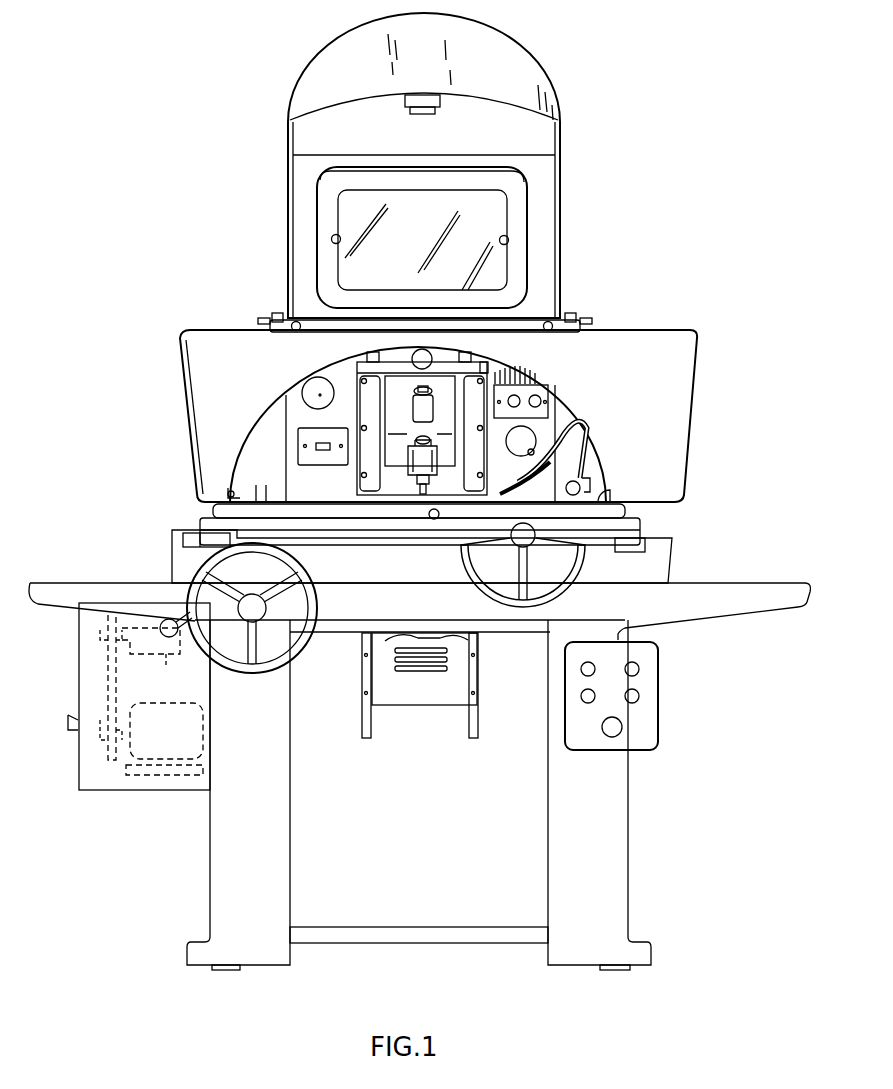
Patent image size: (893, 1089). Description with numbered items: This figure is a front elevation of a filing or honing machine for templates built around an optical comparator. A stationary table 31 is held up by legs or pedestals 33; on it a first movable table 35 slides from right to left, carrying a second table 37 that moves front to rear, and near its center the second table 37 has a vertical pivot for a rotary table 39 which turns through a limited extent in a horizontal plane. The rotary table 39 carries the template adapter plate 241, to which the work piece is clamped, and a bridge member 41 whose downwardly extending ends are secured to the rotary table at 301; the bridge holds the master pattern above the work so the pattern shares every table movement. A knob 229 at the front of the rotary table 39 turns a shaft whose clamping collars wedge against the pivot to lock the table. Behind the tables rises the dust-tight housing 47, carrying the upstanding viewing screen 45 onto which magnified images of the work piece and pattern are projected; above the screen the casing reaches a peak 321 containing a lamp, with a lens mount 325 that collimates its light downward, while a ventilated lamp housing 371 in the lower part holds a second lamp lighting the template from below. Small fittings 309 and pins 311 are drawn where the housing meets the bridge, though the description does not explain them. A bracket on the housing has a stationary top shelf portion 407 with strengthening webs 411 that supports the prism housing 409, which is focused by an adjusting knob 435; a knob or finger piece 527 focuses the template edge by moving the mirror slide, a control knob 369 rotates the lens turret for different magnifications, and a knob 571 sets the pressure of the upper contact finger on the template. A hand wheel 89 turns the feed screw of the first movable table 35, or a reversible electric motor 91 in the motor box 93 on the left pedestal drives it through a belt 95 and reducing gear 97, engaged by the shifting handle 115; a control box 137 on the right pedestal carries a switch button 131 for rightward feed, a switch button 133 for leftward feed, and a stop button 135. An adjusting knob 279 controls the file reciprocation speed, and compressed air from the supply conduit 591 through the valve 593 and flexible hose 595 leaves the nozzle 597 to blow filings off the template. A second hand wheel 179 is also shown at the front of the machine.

The stationary table 31 is at (742, 606).
The legs or pedestals 33 is at (278, 852).
The first movable table 35 is at (660, 570).
The second table 37 is at (365, 540).
The rotary table 39 is at (213, 510).
The bridge member 41 is at (192, 410).
The viewing screen 45 is at (494, 228).
The housing 47 is at (287, 190).
The hand wheel 89 is at (258, 673).
The reversible electric motor 91 is at (152, 708).
The motor box 93 is at (172, 786).
The belt 95 is at (108, 678).
The reducing gear 97 is at (156, 657).
The shifting handle 115 is at (172, 620).
The switch button 131 is at (640, 668).
The switch button 133 is at (580, 668).
The stop button 135 is at (582, 700).
The control box 137 is at (605, 696).
The handwheel 179 is at (553, 592).
The knob 229 is at (436, 520).
The template adapter plate 241 is at (276, 498).
The adjusting knob 279 is at (536, 436).
The bridge end securement 301 is at (228, 494).
The hinge 309 is at (275, 313).
The hinge pin 311 is at (293, 330).
The peak 321 is at (440, 80).
The lens mount 325 is at (410, 110).
The control knob 369 is at (302, 392).
The ventilated lamp housing 371 is at (420, 700).
The stationary top shelf portion 407 is at (482, 368).
The prism housing 409 is at (392, 452).
The strengthening webs 411 is at (382, 408).
The adjusting knob 435 is at (412, 355).
The knob or finger piece 527 is at (423, 386).
The knob 571 is at (420, 438).
The supply conduit 591 is at (578, 480).
The valve 593 is at (590, 484).
The flexible hose 595 is at (585, 440).
The nozzle 597 is at (508, 493).